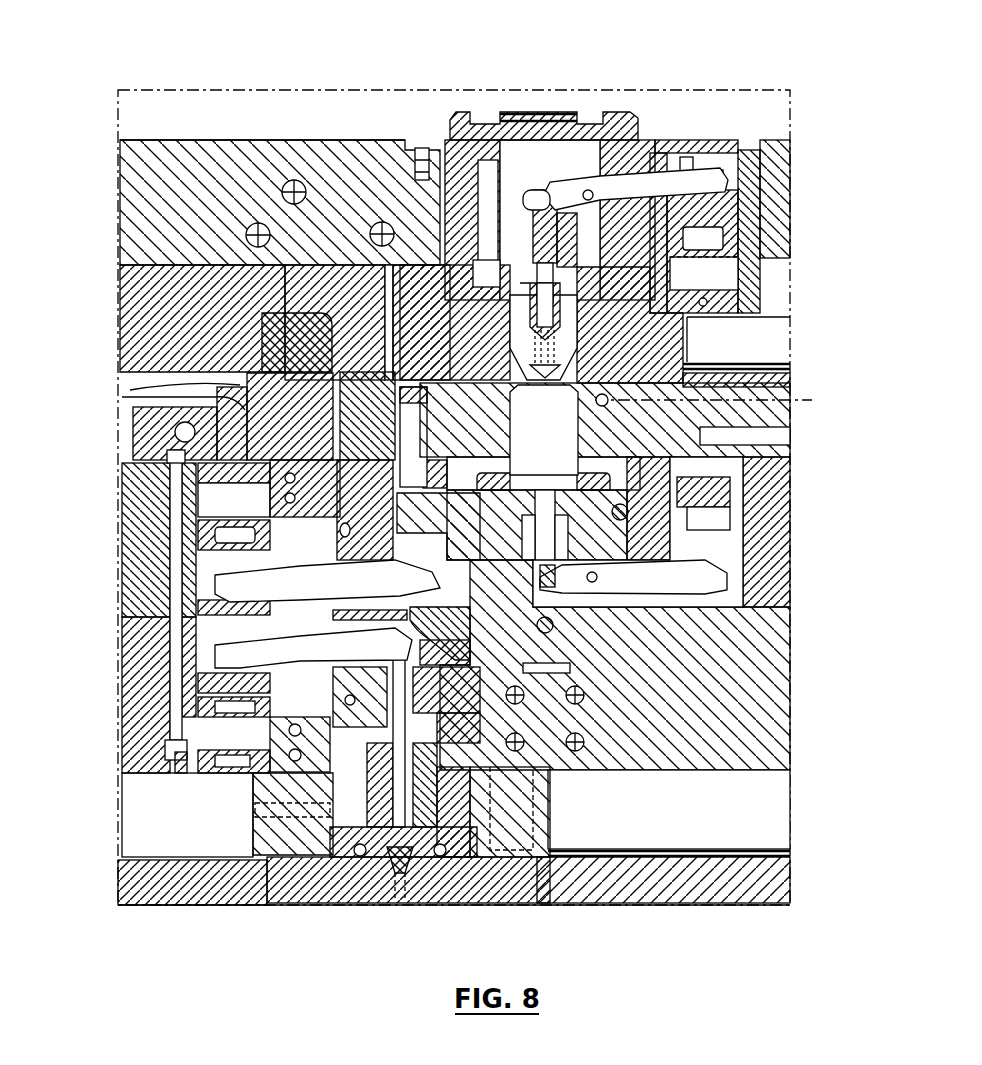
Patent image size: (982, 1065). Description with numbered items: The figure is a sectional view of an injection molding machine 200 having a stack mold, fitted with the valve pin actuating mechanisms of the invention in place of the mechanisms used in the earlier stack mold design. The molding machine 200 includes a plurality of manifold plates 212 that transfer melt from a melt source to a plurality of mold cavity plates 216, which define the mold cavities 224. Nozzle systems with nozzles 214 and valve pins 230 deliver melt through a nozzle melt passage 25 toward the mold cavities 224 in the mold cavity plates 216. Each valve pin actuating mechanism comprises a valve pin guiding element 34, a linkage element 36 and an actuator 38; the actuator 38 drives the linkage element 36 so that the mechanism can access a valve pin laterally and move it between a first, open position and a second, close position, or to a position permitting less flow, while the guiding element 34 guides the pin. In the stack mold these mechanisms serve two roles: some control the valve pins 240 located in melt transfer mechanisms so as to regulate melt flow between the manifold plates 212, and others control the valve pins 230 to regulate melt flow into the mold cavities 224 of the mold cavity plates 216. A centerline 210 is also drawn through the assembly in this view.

The injection molding machine 200 is at (178, 130).
The mold cavity plates 216 is at (353, 347).
The nozzle melt passage 25 is at (487, 135).
The nozzles 214 is at (577, 135).
The valve pin guiding element 34 is at (628, 116).
The linkage element 36 is at (683, 165).
The actuator 38 is at (742, 205).
The valve pins 240 is at (575, 300).
The mold cavities 224 is at (330, 440).
The valve pins 230 is at (245, 417).
The bore centerline 210 is at (786, 420).
The manifold plates 212 is at (740, 492).